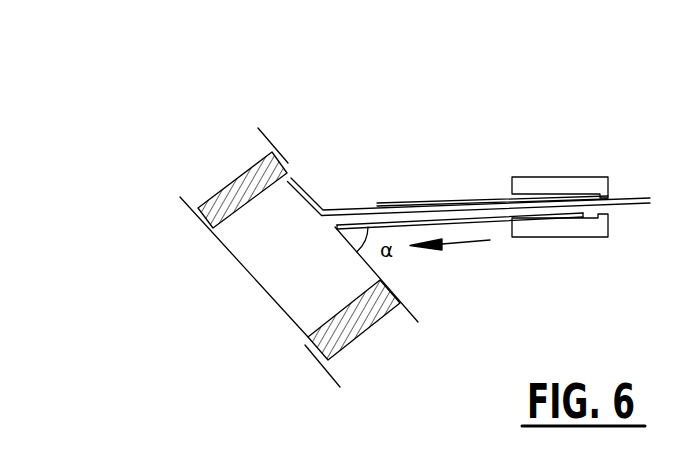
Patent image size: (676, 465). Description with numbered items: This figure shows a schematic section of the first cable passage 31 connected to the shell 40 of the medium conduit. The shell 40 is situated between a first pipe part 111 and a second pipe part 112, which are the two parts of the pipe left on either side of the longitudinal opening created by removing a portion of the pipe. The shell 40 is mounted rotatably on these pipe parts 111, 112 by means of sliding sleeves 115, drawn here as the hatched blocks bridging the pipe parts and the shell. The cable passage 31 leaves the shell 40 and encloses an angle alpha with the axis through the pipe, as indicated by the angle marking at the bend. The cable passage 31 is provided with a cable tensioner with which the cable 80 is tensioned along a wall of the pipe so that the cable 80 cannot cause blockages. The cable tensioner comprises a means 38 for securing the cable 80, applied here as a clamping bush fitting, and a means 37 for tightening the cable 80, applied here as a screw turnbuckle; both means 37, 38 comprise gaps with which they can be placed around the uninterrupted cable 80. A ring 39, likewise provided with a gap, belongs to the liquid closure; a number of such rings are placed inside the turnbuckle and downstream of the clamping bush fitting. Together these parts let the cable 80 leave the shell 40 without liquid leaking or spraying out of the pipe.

The first cable passage 31 is at (472, 142).
The means for tightening the cable 37 is at (490, 224).
The means for securing the cable 38 is at (556, 177).
The ring 39 is at (583, 217).
The shell 40 is at (227, 243).
The cable 80 is at (316, 207).
The first pipe part 111 is at (417, 320).
The second pipe part 112 is at (238, 145).
The sliding sleeves 115 is at (223, 192).